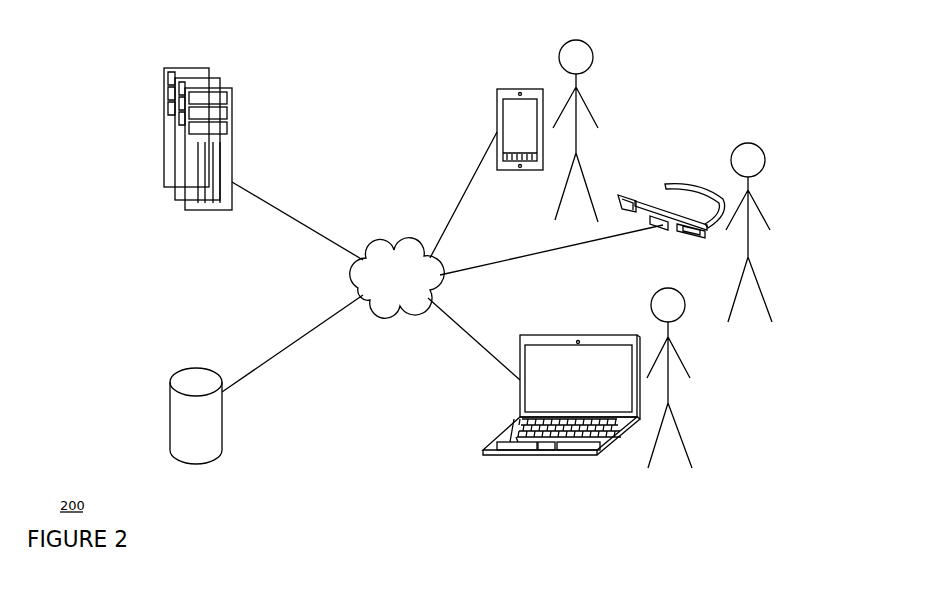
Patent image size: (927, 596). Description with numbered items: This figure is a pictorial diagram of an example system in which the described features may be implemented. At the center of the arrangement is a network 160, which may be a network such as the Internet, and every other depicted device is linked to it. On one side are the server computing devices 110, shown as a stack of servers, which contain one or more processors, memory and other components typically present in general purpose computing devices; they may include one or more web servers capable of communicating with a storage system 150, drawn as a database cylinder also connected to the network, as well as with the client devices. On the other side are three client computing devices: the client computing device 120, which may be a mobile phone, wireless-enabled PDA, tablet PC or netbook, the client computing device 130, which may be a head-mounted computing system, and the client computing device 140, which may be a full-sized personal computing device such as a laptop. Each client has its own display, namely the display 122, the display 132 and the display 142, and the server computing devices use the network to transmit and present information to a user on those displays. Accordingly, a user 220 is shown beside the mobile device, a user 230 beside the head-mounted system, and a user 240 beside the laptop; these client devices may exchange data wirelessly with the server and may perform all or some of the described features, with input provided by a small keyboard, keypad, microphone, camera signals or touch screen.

The server computing device 110 is at (232, 117).
The client computing device 120 is at (500, 110).
The display 122 is at (500, 127).
The client computing device 130 is at (688, 185).
The display 132 is at (702, 233).
The client computing device 140 is at (520, 380).
The display 142 is at (522, 405).
The storage system 150 is at (223, 428).
The network 160 is at (397, 278).
The user 220 is at (597, 122).
The user 230 is at (770, 227).
The user 240 is at (690, 372).